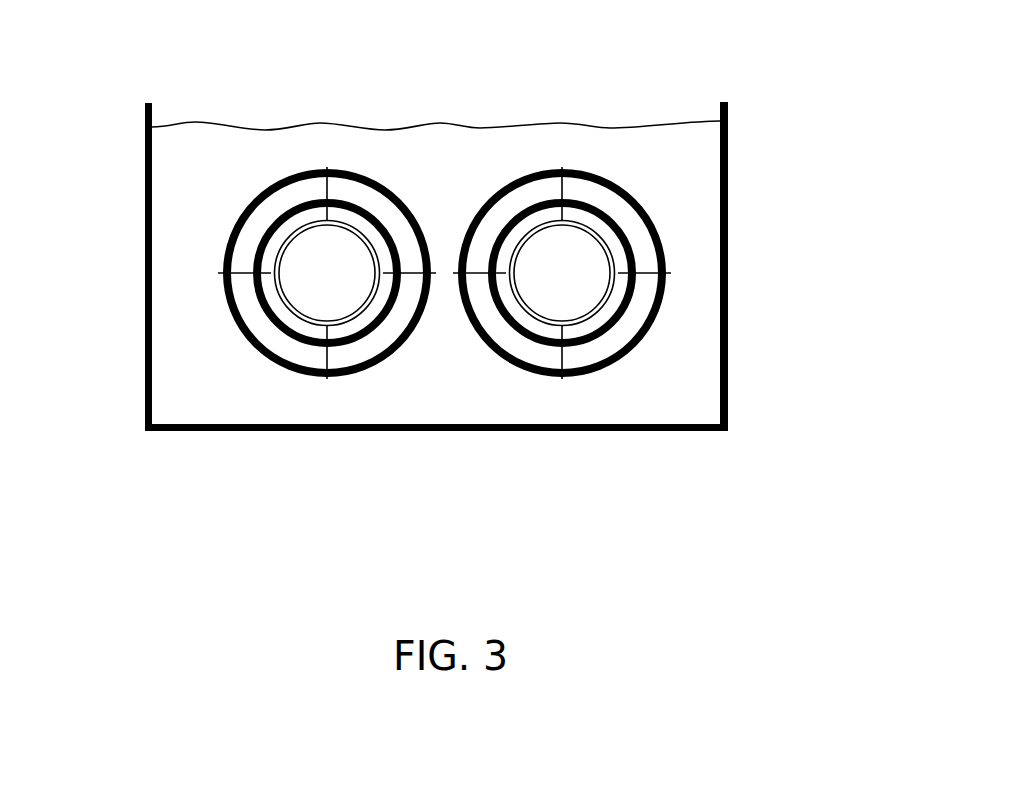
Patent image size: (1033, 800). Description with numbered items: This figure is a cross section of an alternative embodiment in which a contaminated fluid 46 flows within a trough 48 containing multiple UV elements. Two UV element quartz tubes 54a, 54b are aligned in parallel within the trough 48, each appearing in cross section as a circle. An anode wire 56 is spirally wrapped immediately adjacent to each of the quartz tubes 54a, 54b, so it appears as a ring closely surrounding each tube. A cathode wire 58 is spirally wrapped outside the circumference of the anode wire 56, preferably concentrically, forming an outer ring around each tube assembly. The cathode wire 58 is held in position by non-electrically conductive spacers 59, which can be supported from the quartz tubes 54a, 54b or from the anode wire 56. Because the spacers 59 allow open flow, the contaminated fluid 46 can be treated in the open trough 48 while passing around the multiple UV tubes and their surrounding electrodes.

The contaminated fluid 46 is at (483, 127).
The trough 48 is at (143, 195).
The UV element quartz tube 54a is at (298, 318).
The UV element quartz tube 54b is at (592, 307).
The anode wire 56 is at (625, 238).
The cathode wire 58 is at (655, 313).
The non-electrically conductive spacers 59 is at (672, 277).